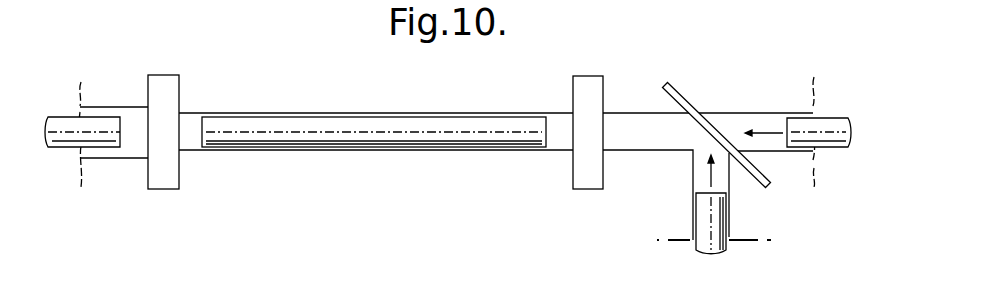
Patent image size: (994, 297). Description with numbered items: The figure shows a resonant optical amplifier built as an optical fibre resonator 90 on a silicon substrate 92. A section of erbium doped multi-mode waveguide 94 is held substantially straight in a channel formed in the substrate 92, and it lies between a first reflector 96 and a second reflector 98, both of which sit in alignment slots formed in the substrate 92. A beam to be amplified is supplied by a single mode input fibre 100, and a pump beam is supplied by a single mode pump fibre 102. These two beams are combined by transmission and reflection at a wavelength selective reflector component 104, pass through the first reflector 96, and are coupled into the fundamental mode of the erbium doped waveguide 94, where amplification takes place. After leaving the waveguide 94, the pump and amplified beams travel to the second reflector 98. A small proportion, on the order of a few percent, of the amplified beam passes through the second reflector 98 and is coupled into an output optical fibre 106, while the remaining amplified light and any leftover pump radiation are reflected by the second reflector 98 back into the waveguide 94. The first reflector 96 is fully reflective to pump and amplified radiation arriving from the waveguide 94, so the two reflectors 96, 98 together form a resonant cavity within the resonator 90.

The optical fibre resonator 90 is at (222, 194).
The silicon substrate 92 is at (373, 89).
The erbium doped multi-mode waveguide 94 is at (317, 135).
The first reflector 96 is at (590, 85).
The second reflector 98 is at (162, 80).
The single mode input fibre 100 is at (702, 218).
The single mode pump fibre 102 is at (802, 122).
The wavelength selective reflector component 104 is at (687, 102).
The output optical fibre 106 is at (92, 123).